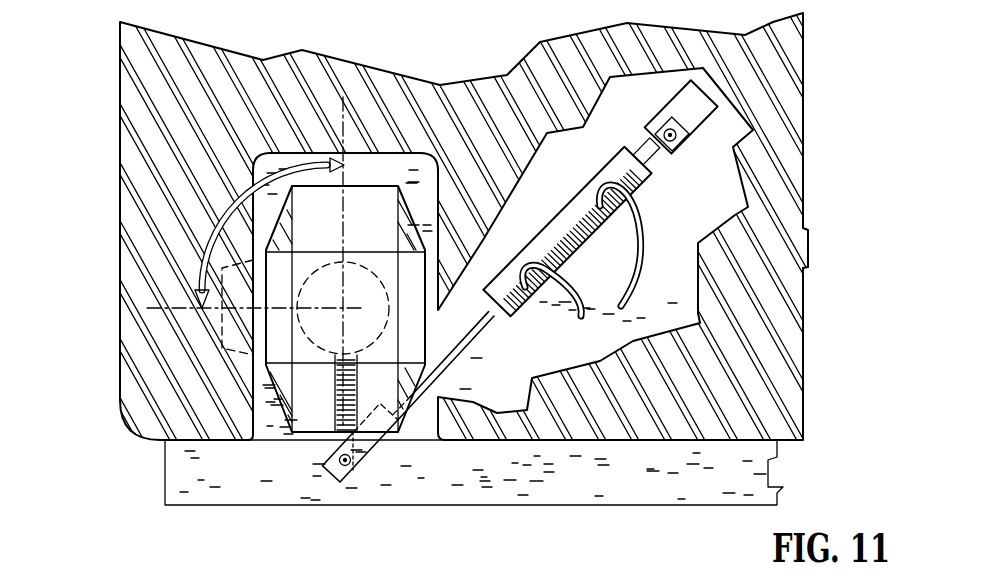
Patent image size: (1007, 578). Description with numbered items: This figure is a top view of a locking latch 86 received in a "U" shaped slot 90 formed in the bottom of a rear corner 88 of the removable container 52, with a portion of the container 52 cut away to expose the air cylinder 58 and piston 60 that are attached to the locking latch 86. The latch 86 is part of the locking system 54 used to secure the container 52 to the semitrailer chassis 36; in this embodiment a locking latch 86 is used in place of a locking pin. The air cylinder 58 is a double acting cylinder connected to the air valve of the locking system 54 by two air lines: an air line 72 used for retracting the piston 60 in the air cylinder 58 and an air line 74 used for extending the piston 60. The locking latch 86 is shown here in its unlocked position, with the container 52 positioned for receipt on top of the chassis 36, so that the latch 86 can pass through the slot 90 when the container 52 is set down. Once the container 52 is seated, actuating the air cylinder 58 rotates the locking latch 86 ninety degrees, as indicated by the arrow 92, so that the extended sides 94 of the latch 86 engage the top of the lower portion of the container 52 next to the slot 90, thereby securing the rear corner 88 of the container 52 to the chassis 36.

The semitrailer chassis 36 is at (156, 483).
The removable container 52 is at (142, 323).
The locking system 54 is at (444, 466).
The air cylinder 58 is at (590, 193).
The piston 60 is at (473, 337).
The air line 72 is at (573, 294).
The air line 74 is at (640, 242).
The locking latch 86 is at (357, 278).
The rear corner 88 is at (148, 393).
The U shaped slot 90 is at (397, 172).
The arrow 92 is at (200, 262).
The extended sides 94 is at (353, 207).